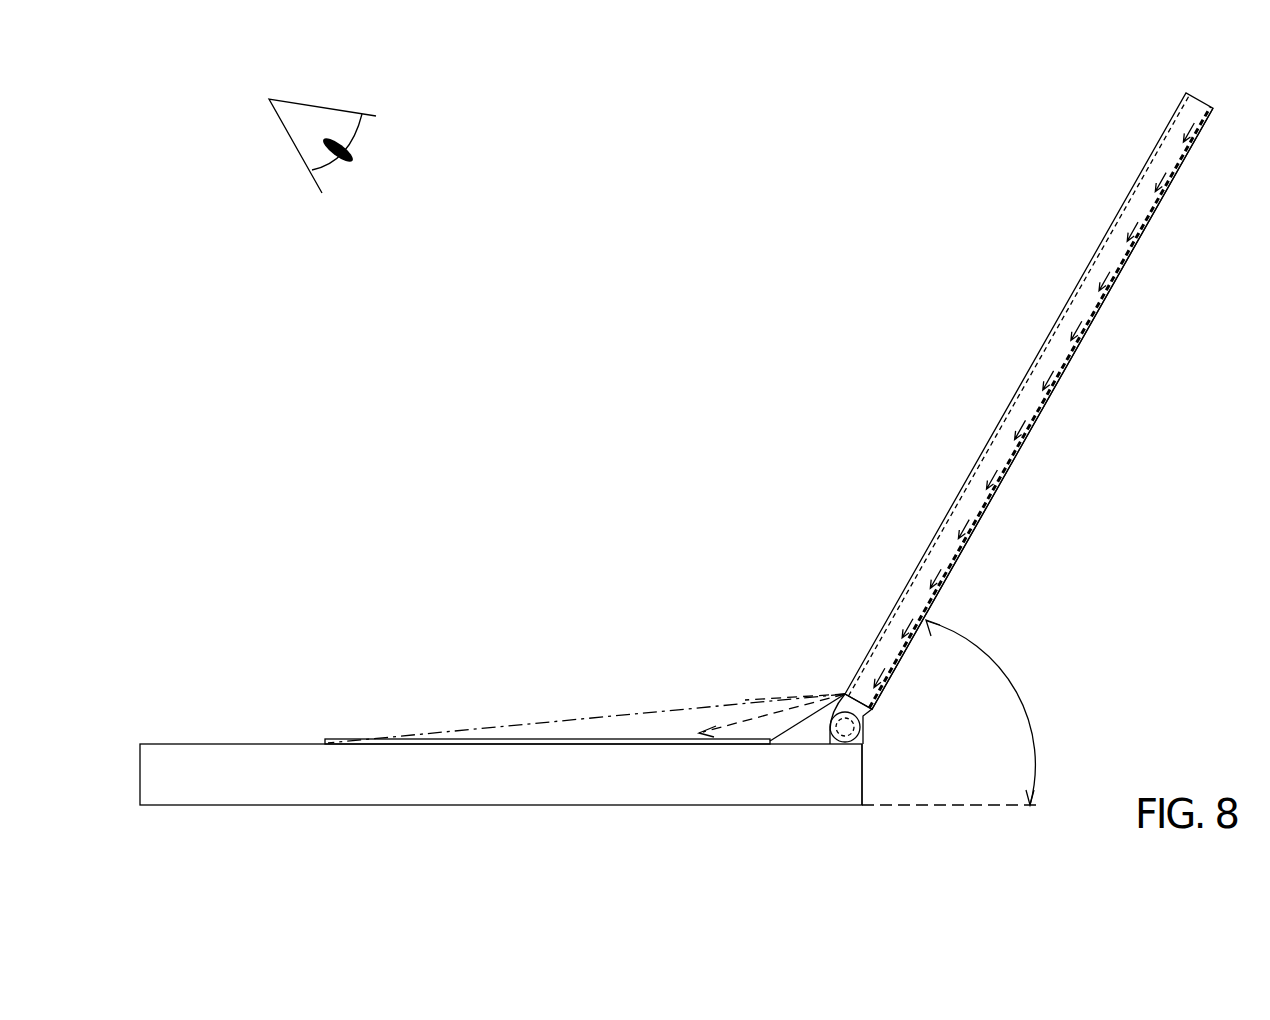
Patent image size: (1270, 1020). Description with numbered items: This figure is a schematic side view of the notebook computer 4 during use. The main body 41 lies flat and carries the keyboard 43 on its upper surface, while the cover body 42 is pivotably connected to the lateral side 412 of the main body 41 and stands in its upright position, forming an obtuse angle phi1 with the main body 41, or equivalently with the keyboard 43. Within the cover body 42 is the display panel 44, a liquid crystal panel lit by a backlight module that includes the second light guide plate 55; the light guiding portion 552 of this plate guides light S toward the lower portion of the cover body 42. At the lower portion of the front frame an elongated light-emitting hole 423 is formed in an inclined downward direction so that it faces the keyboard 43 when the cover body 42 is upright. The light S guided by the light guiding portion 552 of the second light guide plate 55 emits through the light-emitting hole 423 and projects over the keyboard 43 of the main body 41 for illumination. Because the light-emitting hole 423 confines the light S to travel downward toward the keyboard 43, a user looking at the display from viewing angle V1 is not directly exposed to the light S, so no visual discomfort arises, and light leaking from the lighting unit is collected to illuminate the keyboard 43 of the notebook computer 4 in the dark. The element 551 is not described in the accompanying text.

The notebook computer 4 is at (1012, 554).
The main body 41 is at (262, 778).
The lateral side 412 is at (863, 786).
The cover body 42 is at (1029, 401).
The light-emitting hole 423 is at (830, 692).
The keyboard 43 is at (445, 740).
The display panel 44 is at (1100, 244).
The second light guide plate 55 is at (1106, 313).
The light emitting surface 551 is at (1050, 411).
The light guiding portion 552 is at (873, 722).
The light S is at (733, 708).
The viewing angle V1 is at (836, 685).
The obtuse angle phi1 is at (950, 712).